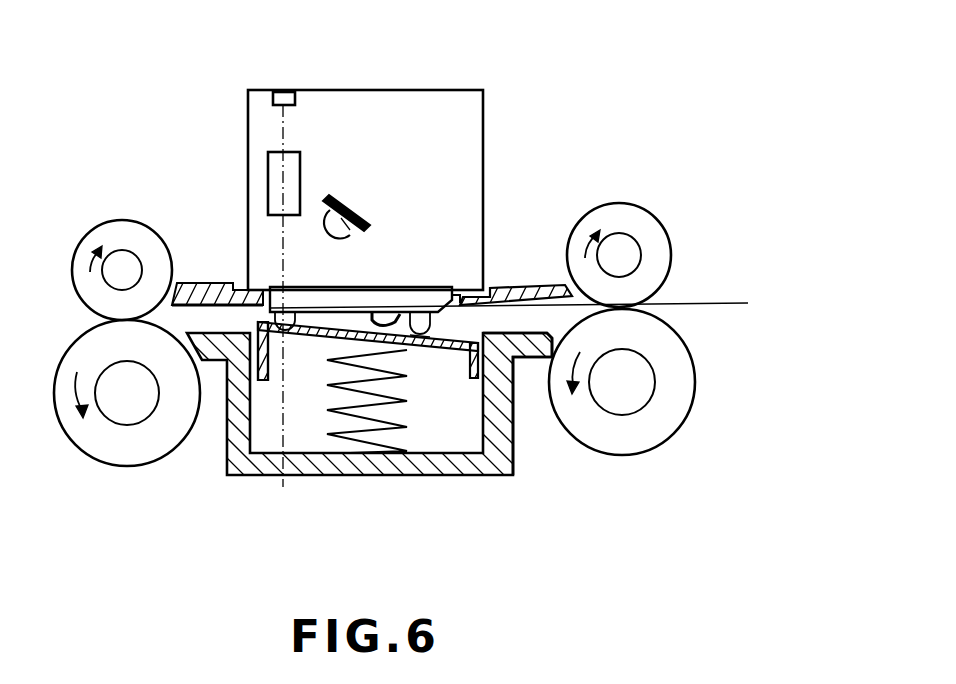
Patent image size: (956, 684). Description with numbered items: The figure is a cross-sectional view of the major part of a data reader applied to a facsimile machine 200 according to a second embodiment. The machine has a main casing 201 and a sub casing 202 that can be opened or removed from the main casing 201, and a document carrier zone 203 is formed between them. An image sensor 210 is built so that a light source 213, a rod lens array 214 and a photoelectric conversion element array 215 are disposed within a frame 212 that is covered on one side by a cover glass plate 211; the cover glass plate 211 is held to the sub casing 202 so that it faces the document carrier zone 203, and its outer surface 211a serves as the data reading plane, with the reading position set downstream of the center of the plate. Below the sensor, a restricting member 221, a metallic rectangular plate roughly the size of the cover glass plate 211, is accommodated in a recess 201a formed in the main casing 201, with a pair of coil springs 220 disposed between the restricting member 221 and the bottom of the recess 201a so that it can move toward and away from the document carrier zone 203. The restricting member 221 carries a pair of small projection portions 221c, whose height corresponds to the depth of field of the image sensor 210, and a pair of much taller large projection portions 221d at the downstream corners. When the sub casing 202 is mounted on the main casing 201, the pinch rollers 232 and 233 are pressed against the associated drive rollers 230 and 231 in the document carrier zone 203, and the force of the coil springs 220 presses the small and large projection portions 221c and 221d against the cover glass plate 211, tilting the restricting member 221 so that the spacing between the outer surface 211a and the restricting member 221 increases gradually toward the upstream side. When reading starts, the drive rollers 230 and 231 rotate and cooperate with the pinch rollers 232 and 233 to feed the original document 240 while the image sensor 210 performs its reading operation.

The facsimile machine 200 is at (665, 122).
The main casing 201 is at (493, 475).
The recess 201a is at (477, 418).
The sub casing 202 is at (532, 284).
The document carrier zone 203 is at (215, 324).
The image sensor 210 is at (341, 256).
The cover glass plate 211 is at (405, 290).
The outer surface 211a is at (420, 318).
The frame 212 is at (467, 88).
The light source 213 is at (340, 236).
The rod lens array 214 is at (302, 163).
The photoelectric conversion element array 215 is at (283, 90).
The coil springs 220 is at (362, 438).
The restricting member 221 is at (460, 462).
The small projection portions 221c is at (284, 347).
The large projection portions 221d is at (422, 345).
The drive roller 230 is at (655, 432).
The drive roller 231 is at (85, 432).
The pinch roller 232 is at (657, 247).
The pinch roller 233 is at (112, 230).
The original document 240 is at (707, 306).